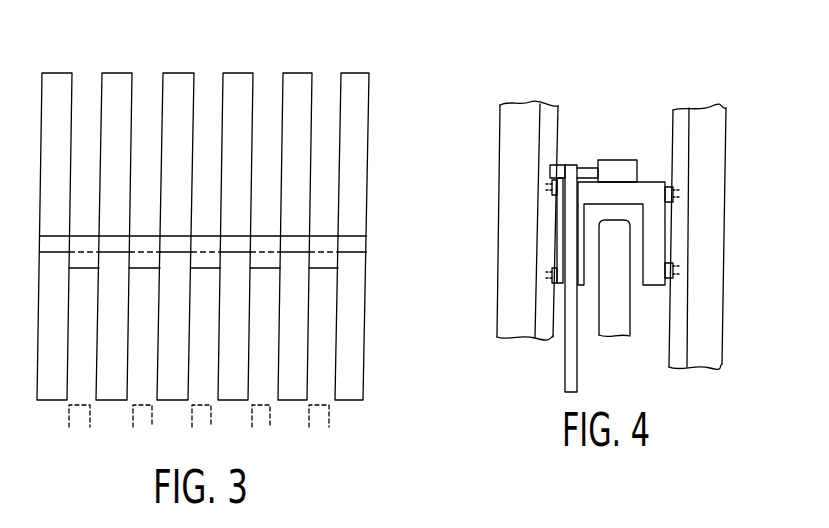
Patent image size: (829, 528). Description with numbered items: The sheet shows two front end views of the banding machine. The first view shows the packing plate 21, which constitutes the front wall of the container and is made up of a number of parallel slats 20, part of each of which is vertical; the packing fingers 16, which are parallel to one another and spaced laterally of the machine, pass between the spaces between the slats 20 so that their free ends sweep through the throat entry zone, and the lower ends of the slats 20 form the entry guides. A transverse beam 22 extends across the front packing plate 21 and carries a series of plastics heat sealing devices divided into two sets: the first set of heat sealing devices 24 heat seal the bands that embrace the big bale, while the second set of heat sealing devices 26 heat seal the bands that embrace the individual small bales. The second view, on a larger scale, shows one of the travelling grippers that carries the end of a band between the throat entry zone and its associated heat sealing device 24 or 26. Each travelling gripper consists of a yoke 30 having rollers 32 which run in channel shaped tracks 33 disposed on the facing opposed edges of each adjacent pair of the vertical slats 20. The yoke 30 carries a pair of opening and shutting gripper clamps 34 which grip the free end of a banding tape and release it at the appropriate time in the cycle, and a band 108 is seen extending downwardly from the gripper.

In FIG. 3, the packing fingers 16 is at (312, 422).
In FIG. 4, the packing fingers 16 is at (615, 337).
In FIG. 3, the slats 20 is at (60, 339).
In FIG. 4, the slats 20 is at (712, 337).
In FIG. 3, the packing plate 21 is at (375, 149).
In FIG. 3, the transverse beam 22 is at (361, 248).
In FIG. 3, the heat sealing devices 24 is at (82, 262).
In FIG. 3, the heat sealing devices 26 is at (144, 262).
In FIG. 4, the yoke 30 is at (657, 232).
In FIG. 4, the rollers 32 is at (548, 191).
In FIG. 4, the channel shaped tracks 33 is at (673, 118).
In FIG. 4, the gripper clamps 34 is at (560, 170).
In FIG. 4, the band 108 is at (566, 362).